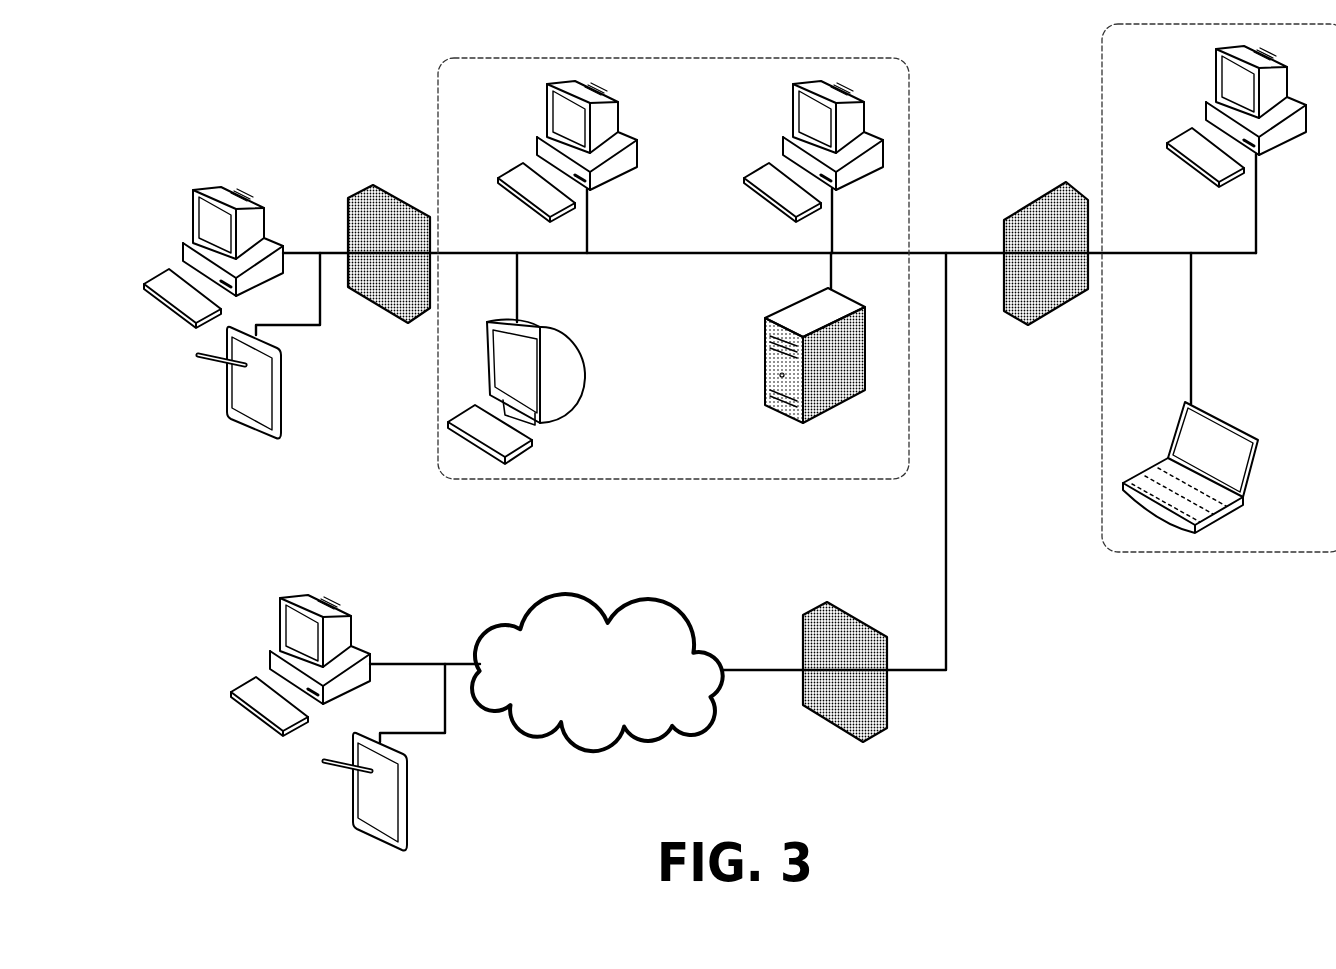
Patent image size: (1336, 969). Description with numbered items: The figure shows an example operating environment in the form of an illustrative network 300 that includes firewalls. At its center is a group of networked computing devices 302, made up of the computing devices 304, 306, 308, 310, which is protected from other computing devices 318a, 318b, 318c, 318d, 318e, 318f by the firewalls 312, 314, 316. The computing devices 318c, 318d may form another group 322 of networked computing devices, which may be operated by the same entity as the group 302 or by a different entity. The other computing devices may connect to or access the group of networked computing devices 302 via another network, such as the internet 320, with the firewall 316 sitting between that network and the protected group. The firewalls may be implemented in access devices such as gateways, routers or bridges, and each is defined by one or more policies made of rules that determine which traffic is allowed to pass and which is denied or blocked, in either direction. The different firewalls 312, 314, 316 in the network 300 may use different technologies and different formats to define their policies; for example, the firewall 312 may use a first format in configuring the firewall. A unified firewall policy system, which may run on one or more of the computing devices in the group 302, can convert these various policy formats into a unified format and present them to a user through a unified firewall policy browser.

The network 300 is at (203, 142).
The group of networked computing devices 302 is at (910, 82).
The computing device 304 is at (545, 110).
The computing device 306 is at (790, 110).
The computing device 308 is at (588, 375).
The computing device 310 is at (782, 420).
The firewall 312 is at (373, 184).
The firewall 314 is at (1058, 183).
The firewall 316 is at (890, 705).
The other computing device 318a is at (185, 219).
The other computing device 318b is at (222, 413).
The other computing device 318c is at (1215, 75).
The other computing device 318d is at (1248, 484).
The other computing device 318e is at (350, 823).
The other computing device 318f is at (265, 663).
The internet 320 is at (695, 717).
The another group of networked computing devices 322 is at (1232, 554).